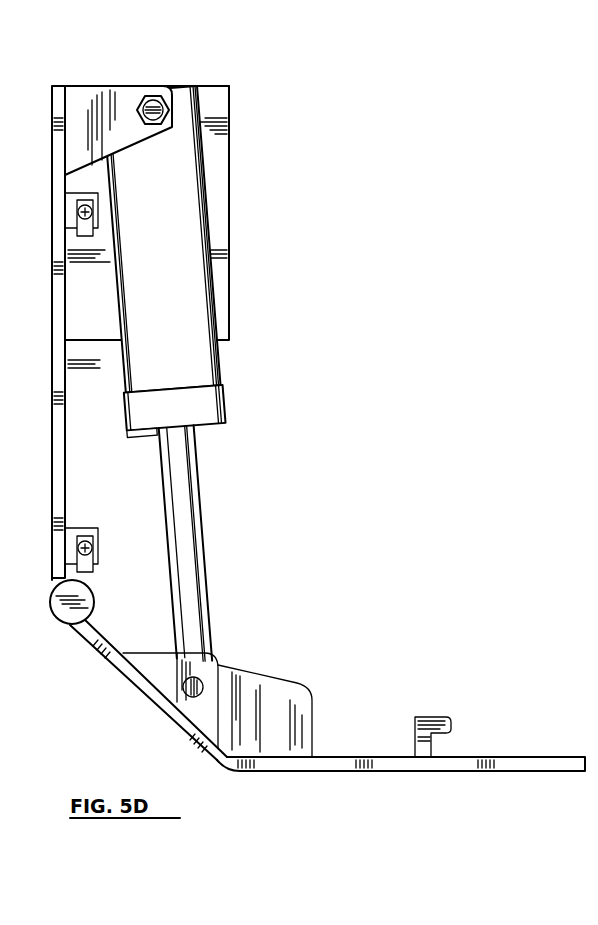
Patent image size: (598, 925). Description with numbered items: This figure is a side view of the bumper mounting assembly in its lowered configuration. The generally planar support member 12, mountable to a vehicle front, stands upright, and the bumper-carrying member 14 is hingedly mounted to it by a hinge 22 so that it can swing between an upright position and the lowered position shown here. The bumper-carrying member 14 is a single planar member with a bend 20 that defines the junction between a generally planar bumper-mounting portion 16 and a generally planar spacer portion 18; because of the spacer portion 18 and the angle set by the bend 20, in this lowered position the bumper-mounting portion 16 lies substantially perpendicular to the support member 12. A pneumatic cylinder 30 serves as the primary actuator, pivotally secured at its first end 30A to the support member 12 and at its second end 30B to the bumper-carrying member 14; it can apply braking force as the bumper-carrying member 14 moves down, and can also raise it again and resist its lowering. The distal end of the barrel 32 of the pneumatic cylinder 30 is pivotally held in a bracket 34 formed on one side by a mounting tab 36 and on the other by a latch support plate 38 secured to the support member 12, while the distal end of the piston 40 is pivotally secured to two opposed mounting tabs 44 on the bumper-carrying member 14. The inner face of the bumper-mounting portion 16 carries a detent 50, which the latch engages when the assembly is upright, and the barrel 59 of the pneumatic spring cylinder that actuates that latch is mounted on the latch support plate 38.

The support member 12 is at (52, 488).
The bumper-carrying member 14 is at (510, 762).
The bumper-mounting portion 16 is at (414, 763).
The spacer portion 18 is at (160, 710).
The bend 20 is at (225, 770).
The hinge 22 is at (65, 608).
The pneumatic cylinder 30 is at (204, 355).
The first end 30A is at (169, 78).
The second end 30B is at (160, 652).
The barrel 32 is at (176, 314).
The bracket 34 is at (155, 76).
The mounting tab 36 is at (82, 103).
The latch support plate 38 is at (218, 197).
The piston 40 is at (178, 469).
The mounting tabs 44 is at (268, 692).
The detent 50 is at (425, 717).
The barrel 59 is at (123, 428).